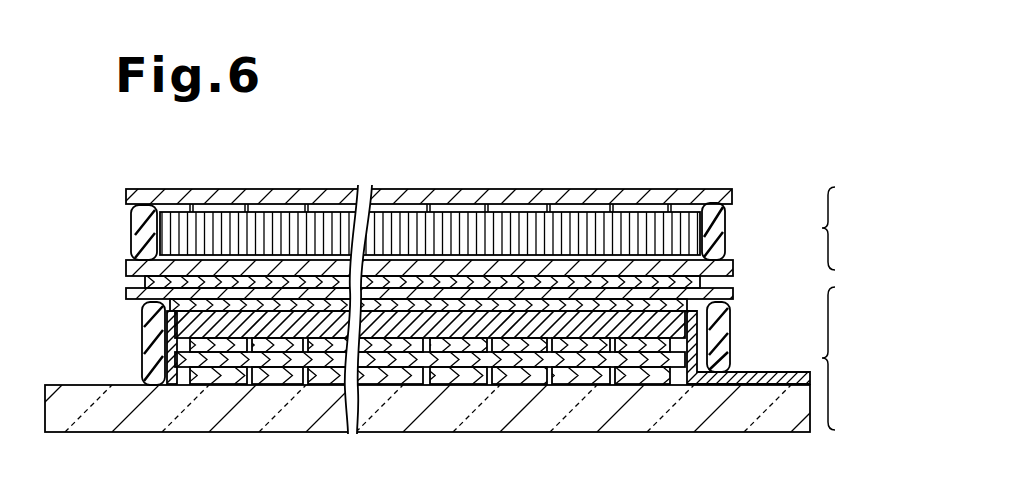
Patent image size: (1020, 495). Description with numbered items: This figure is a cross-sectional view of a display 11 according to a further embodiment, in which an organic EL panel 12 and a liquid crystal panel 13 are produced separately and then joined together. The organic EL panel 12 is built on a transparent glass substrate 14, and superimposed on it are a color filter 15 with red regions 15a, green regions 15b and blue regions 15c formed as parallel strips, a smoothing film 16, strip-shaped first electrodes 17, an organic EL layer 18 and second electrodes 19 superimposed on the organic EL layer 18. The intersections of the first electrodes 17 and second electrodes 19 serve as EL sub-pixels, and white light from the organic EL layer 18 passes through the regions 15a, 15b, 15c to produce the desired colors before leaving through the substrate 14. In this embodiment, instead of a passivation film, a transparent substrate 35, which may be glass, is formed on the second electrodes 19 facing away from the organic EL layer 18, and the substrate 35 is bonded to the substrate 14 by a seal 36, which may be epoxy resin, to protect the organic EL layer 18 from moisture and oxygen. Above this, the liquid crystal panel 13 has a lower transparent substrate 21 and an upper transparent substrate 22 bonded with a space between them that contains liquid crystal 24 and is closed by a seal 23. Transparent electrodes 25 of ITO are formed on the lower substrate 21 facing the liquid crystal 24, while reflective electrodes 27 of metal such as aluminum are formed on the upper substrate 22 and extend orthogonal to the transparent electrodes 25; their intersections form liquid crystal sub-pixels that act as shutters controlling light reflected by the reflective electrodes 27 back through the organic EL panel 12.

The display 11 is at (618, 147).
The organic EL panel 12 is at (847, 358).
The liquid crystal panel 13 is at (847, 228).
The transparent glass substrate 14 is at (766, 425).
The color filter 15 is at (430, 427).
The red region 15a is at (218, 387).
The green region 15b is at (270, 387).
The blue region 15c is at (328, 387).
The smoothing film 16 is at (158, 386).
The first electrode 17 is at (168, 369).
The organic EL layer 18 is at (183, 320).
The second electrode 19 is at (720, 314).
The lower transparent substrate 21 is at (133, 283).
The upper transparent substrate 22 is at (695, 190).
The seal 23 is at (727, 208).
The liquid crystal 24 is at (557, 240).
The transparent electrode 25 is at (720, 222).
The reflective electrode 27 is at (405, 189).
The transparent substrate 35 is at (127, 295).
The seal 36 is at (143, 351).